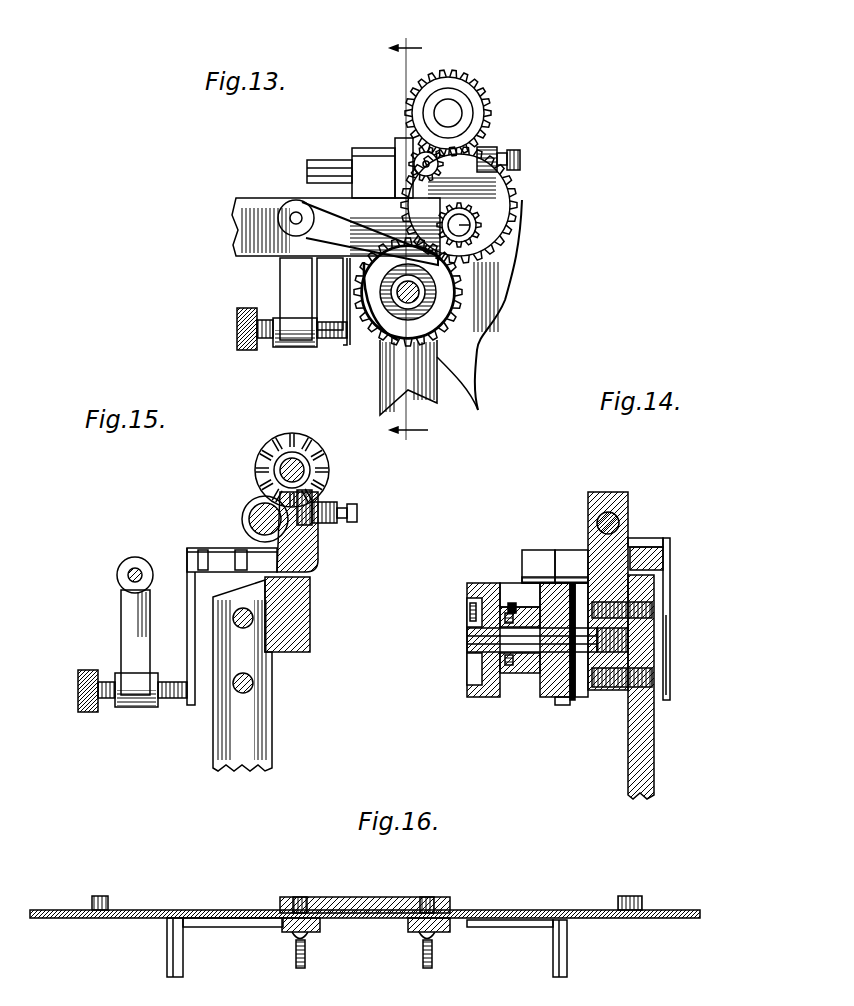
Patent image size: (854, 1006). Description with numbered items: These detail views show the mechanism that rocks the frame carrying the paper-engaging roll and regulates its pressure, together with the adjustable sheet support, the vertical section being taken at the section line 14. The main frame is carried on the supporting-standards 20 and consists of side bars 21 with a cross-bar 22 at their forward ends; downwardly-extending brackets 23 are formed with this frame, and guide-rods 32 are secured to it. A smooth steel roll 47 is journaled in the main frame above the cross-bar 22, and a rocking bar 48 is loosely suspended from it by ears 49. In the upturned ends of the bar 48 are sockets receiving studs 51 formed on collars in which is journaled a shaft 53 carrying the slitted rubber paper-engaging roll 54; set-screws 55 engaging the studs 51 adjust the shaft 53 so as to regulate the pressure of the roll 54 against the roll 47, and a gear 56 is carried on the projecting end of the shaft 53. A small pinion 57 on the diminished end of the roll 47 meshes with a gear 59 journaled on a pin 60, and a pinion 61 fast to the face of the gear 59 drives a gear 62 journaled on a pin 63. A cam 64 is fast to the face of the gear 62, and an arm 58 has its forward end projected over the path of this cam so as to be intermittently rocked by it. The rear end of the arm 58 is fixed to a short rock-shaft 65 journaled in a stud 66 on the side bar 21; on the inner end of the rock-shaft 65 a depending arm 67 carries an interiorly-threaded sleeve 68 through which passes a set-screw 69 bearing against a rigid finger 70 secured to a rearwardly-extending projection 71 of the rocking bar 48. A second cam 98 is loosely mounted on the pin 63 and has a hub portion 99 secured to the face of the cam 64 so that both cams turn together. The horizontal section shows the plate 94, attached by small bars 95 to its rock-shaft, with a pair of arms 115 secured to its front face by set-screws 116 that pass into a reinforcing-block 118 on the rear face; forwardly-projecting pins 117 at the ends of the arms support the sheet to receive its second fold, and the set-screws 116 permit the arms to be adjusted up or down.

In FIG. 13, the section line 14 is at (425, 40).
In FIG. 13, the supporting-standards 20 is at (430, 402).
In FIG. 15, the supporting-standards 20 is at (250, 730).
In FIG. 14, the supporting-standards 20 is at (637, 765).
In FIG. 13, the side bars 21 is at (236, 228).
In FIG. 14, the side bars 21 is at (625, 538).
In FIG. 15, the cross-bar 22 is at (300, 625).
In FIG. 13, the brackets 23 is at (463, 366).
In FIG. 13, the guide-rods 32 is at (328, 165).
In FIG. 14, the guide-rods 32 is at (612, 515).
In FIG. 15, the roll 47 is at (250, 502).
In FIG. 15, the rocking bar 48 is at (318, 556).
In FIG. 15, the ears 49 is at (243, 513).
In FIG. 15, the studs 51 is at (310, 505).
In FIG. 13, the shaft 53 is at (450, 115).
In FIG. 15, the shaft 53 is at (290, 468).
In FIG. 15, the paper-engaging roll 54 is at (318, 447).
In FIG. 13, the set-screws 55 is at (512, 152).
In FIG. 15, the set-screws 55 is at (358, 512).
In FIG. 13, the gear 56 is at (440, 88).
In FIG. 13, the pinion 57 is at (418, 172).
In FIG. 13, the arm 58 is at (334, 236).
In FIG. 14, the arm 58 is at (533, 568).
In FIG. 13, the gear 59 is at (492, 197).
In FIG. 13, the pin 60 is at (470, 226).
In FIG. 13, the pinion 61 is at (438, 212).
In FIG. 13, the gear 62 is at (458, 296).
In FIG. 14, the gear 62 is at (562, 705).
In FIG. 13, the pin 63 is at (376, 330).
In FIG. 14, the pin 63 is at (478, 640).
In FIG. 13, the cam 64 is at (400, 322).
In FIG. 14, the cam 64 is at (540, 690).
In FIG. 13, the rock-shaft 65 is at (294, 216).
In FIG. 15, the rock-shaft 65 is at (137, 572).
In FIG. 13, the stud 66 is at (370, 233).
In FIG. 14, the stud 66 is at (568, 550).
In FIG. 13, the arm 67 is at (282, 278).
In FIG. 15, the arm 67 is at (124, 620).
In FIG. 13, the sleeve 68 is at (296, 336).
In FIG. 15, the sleeve 68 is at (130, 707).
In FIG. 13, the set-screw 69 is at (237, 328).
In FIG. 15, the set-screw 69 is at (170, 707).
In FIG. 13, the finger 70 is at (343, 340).
In FIG. 15, the finger 70 is at (187, 645).
In FIG. 14, the finger 70 is at (668, 540).
In FIG. 15, the projection 71 is at (215, 560).
In FIG. 14, the projection 71 is at (670, 562).
In FIG. 16, the plate 94 is at (215, 912).
In FIG. 16, the bars 95 is at (105, 898).
In FIG. 14, the cam 98 is at (478, 585).
In FIG. 14, the hub portion 99 is at (514, 612).
In FIG. 16, the arms 115 is at (228, 928).
In FIG. 16, the set-screws 116 is at (422, 955).
In FIG. 16, the pins 117 is at (167, 957).
In FIG. 16, the reinforcing-block 118 is at (368, 897).